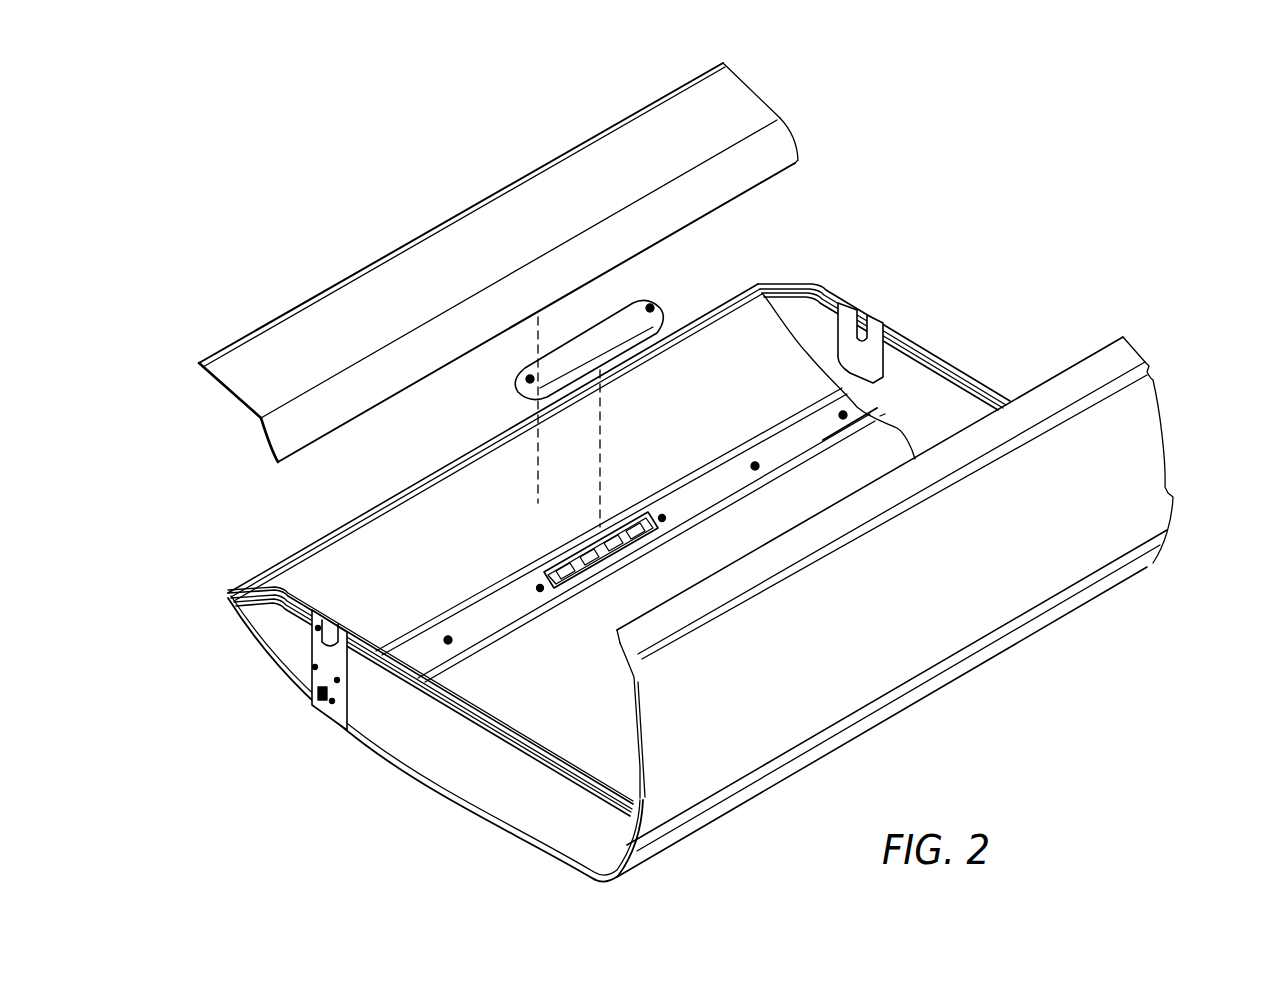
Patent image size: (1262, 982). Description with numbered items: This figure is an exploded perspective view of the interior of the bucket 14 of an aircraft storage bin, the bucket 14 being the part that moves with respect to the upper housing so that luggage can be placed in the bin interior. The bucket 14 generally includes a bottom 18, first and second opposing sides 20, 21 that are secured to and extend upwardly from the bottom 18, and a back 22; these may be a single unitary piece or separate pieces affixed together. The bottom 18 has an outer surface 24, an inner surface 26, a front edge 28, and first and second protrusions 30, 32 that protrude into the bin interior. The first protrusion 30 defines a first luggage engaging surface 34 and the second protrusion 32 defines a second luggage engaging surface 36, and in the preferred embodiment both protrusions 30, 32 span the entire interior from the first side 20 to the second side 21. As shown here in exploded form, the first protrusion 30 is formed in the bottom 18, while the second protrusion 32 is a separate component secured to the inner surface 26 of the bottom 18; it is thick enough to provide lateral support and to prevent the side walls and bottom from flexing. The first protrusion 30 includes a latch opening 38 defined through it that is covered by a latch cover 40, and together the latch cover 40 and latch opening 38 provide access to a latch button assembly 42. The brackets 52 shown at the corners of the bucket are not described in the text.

The bucket 14 is at (200, 647).
The bottom 18 is at (330, 557).
The first side 20 is at (413, 758).
The second side 21 is at (903, 367).
The back 22 is at (1143, 398).
The outer surface 24 is at (455, 808).
The inner surface 26 is at (538, 711).
The front edge 28 is at (262, 582).
The first protrusion 30 is at (800, 442).
The second protrusion 32 is at (735, 98).
The first luggage engaging surface 34 is at (873, 417).
The second luggage engaging surface 36 is at (773, 165).
The latch opening 38 is at (536, 583).
The latch cover 40 is at (632, 322).
The latch button assembly 42 is at (627, 496).
The mounting bracket 52 is at (879, 302).